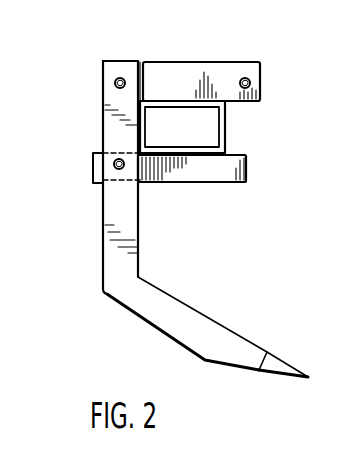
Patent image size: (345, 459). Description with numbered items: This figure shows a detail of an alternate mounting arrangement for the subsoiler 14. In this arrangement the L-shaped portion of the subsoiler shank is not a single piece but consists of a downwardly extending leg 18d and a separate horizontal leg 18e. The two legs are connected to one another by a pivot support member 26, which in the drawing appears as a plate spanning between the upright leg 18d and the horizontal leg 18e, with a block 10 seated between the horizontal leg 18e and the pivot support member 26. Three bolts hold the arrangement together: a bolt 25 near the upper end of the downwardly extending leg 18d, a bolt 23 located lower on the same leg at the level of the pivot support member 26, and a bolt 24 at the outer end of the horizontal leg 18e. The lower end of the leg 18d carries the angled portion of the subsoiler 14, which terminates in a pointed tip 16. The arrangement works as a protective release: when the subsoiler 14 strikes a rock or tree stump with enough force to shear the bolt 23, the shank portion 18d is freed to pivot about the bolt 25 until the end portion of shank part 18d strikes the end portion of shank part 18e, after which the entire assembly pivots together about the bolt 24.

The block / spacer member 10 is at (225, 118).
The subsoiler 14 is at (215, 325).
The pointed tip 16 is at (283, 363).
The downwardly extending leg 18d is at (110, 203).
The horizontal leg 18e is at (200, 78).
The bolt 23 is at (113, 163).
The bolt 24 is at (251, 85).
The bolt 25 is at (115, 81).
The pivot support member 26 is at (246, 168).